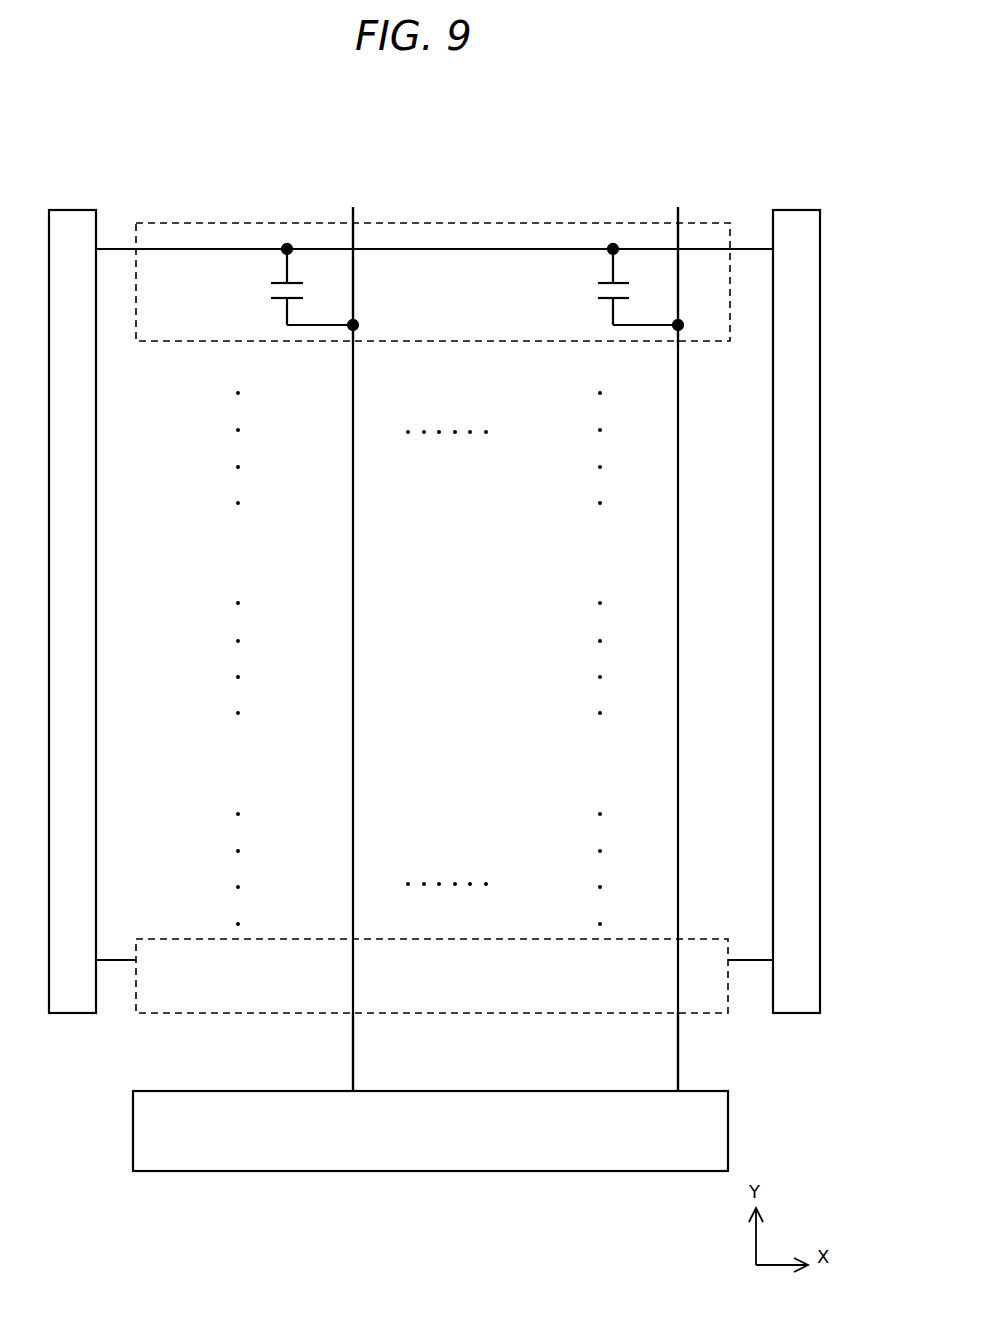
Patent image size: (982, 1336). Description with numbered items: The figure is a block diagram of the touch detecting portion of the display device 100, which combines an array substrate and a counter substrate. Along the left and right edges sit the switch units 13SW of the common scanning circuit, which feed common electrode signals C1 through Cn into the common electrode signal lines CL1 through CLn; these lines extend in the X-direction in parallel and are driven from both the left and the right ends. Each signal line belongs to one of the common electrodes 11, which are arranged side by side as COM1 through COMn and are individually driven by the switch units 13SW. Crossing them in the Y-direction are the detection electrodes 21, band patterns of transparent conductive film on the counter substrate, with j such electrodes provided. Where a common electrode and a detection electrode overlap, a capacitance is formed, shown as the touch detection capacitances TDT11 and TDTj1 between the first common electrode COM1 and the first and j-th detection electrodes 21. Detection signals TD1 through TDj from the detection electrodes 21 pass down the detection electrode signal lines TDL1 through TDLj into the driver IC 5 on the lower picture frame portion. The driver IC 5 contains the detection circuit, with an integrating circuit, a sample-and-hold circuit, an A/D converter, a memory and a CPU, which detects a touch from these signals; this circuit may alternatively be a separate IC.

The display device 100 is at (510, 124).
The switch unit 13SW is at (77, 210).
The common electrode signal line CL1 is at (118, 248).
The common electrode signal line CLn is at (112, 962).
The common electrode 11 is at (498, 223).
The detection electrode 21 is at (355, 240).
The touch detection capacitance TDT11 is at (278, 325).
The touch detection capacitance TDTj1 is at (610, 325).
The detection electrode signal line TDL1 is at (352, 1040).
The detection electrode signal line TDLj is at (677, 1040).
The driver IC 5 is at (408, 1172).
The common electrode signal C1 is at (433, 250).
The common electrode signal Cn is at (432, 961).
The common electrode COM1 is at (430, 283).
The common electrode COMn is at (430, 976).
The detection signal TD1 is at (347, 1113).
The detection signal TDj is at (674, 1113).